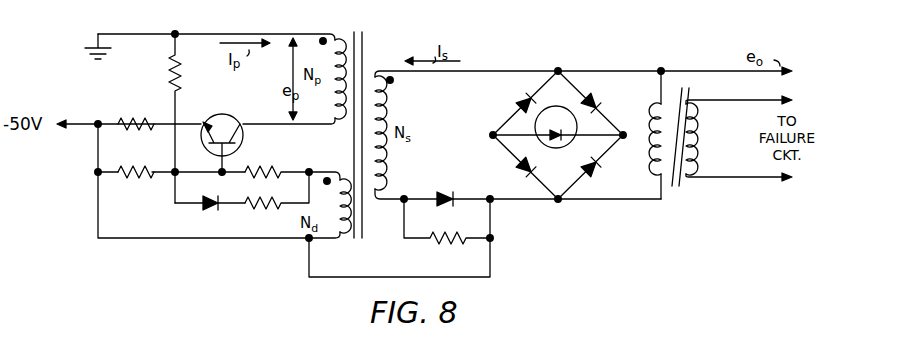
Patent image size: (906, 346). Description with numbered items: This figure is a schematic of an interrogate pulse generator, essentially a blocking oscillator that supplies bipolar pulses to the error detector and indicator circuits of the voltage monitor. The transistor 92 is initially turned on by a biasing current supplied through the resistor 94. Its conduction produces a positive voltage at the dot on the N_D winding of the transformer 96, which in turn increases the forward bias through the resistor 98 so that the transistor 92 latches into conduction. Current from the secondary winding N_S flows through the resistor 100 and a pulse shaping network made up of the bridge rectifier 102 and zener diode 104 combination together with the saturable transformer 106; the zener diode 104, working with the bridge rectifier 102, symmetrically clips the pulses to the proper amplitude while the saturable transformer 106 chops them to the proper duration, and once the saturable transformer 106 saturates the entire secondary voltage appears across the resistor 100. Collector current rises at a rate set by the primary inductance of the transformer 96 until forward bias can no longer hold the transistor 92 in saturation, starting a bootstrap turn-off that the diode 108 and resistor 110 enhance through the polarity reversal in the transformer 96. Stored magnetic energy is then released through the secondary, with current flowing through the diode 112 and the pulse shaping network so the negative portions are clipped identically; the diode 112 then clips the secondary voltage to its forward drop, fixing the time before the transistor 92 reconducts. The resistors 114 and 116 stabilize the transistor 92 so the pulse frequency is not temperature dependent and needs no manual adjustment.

The transistor 92 is at (227, 121).
The resistor 94 is at (170, 82).
The transformer 96 is at (368, 63).
The resistor 98 is at (265, 166).
The resistor 100 is at (426, 244).
The bridge rectifier 102 is at (510, 100).
The zener diode 104 is at (578, 151).
The saturable transformer 106 is at (689, 100).
The diode 108 is at (198, 208).
The resistor 110 is at (255, 208).
The diode 112 is at (441, 194).
The resistor 114 is at (140, 120).
The resistor 116 is at (142, 168).